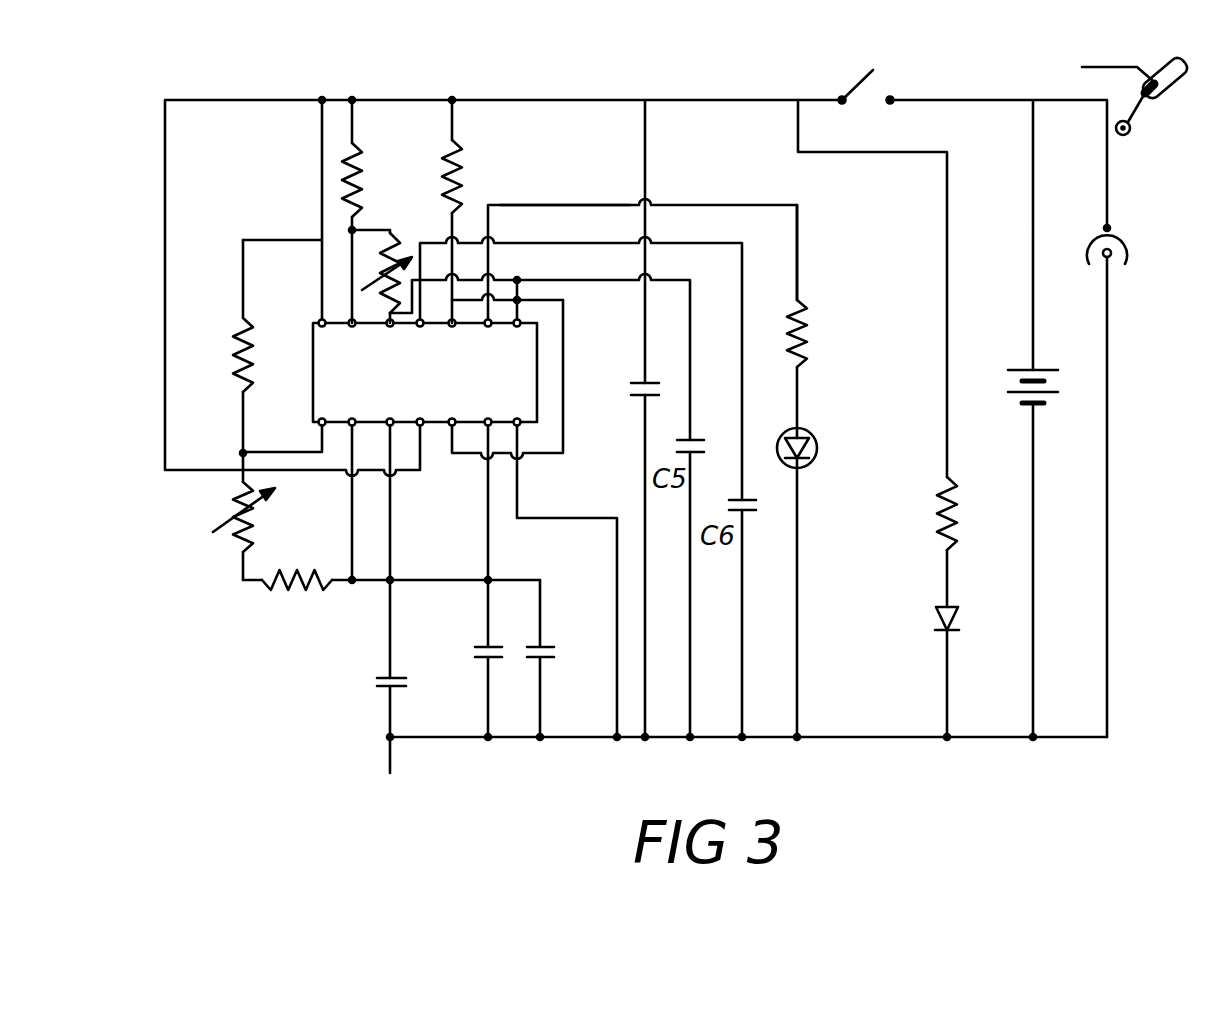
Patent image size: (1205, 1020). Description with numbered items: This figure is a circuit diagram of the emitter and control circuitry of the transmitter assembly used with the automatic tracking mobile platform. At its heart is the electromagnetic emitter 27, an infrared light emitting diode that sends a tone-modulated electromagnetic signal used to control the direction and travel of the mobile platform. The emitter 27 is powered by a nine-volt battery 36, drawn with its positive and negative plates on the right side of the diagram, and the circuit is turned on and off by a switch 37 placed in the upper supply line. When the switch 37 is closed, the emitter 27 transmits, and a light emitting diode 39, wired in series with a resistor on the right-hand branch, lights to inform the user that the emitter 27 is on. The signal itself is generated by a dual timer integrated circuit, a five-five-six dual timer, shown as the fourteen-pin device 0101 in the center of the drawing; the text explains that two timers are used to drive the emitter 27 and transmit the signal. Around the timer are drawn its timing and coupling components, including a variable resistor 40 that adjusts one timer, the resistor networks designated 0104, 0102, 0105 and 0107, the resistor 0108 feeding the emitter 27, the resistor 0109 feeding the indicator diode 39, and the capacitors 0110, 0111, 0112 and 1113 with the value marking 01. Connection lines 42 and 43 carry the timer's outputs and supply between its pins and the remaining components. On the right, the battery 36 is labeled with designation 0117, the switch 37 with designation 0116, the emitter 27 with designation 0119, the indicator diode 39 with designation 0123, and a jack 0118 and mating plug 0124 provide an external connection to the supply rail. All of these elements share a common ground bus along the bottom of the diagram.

The electromagnetic emitter 27 is at (831, 478).
The battery 36 is at (1027, 403).
The switch 37 is at (842, 97).
The light emitting diode 39 is at (958, 654).
The variable resistor R2 40 is at (398, 262).
The timer output line 42 is at (528, 342).
The timer supply line 43 is at (569, 205).
The LM556 dual timer IC 0101 is at (425, 373).
The potentiometer R1 0102 is at (243, 525).
The 1K resistor (R3, R5) 0104 is at (309, 285).
The resistor R4 0105 is at (380, 624).
The resistor R6 0107 is at (487, 211).
The resistor R7 0108 is at (829, 304).
The resistor R9 0109 is at (984, 517).
The capacitor C1 0110 is at (362, 694).
The capacitor C2 0111 is at (466, 656).
The capacitor C3 0112 is at (570, 658).
The capacitor C4 1113 is at (615, 390).
The capacitor C4 value 01 is at (621, 389).
The switch wiring 0116 is at (872, 288).
The battery 0117 is at (1063, 366).
The jack 0118 is at (1134, 467).
The infrared LED 0119 is at (823, 478).
The LED 0123 is at (928, 624).
The plug 0124 is at (1135, 85).